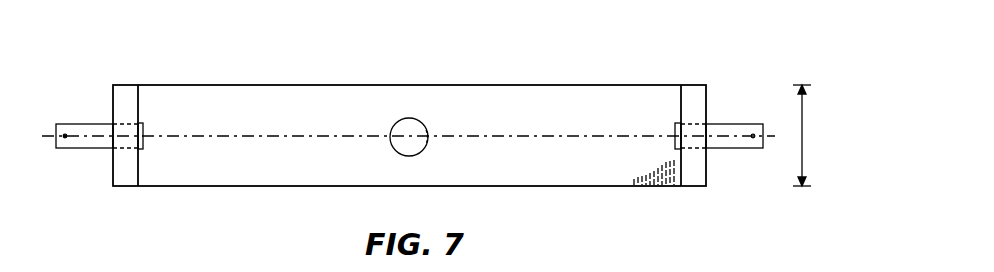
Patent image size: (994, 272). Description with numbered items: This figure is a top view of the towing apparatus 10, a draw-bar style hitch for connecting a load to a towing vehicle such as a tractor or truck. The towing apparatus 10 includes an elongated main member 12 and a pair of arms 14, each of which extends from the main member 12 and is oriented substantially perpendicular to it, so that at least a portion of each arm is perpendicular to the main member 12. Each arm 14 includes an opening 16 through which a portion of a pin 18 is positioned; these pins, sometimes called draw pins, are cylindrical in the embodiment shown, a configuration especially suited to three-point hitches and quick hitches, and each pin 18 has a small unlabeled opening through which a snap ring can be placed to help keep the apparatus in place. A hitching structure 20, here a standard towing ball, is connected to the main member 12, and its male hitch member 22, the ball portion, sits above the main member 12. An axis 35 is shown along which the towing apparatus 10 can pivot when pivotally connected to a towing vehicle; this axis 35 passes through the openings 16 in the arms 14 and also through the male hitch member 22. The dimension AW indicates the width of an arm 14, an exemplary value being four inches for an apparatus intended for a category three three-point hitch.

The towing apparatus 10 is at (648, 61).
The main member 12 is at (233, 178).
The arms 14 is at (125, 178).
The opening 16 is at (127, 123).
The pin 18 is at (90, 152).
The hitching structure 20 is at (380, 118).
The male hitch member 22 is at (409, 117).
The axis 35 is at (553, 136).
The arm width AW is at (803, 136).